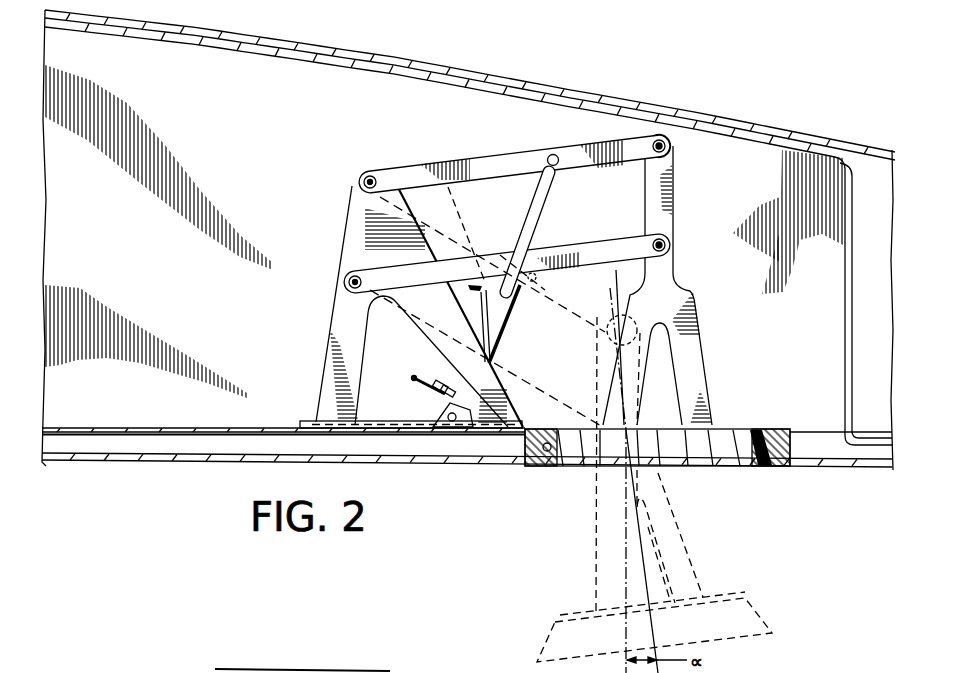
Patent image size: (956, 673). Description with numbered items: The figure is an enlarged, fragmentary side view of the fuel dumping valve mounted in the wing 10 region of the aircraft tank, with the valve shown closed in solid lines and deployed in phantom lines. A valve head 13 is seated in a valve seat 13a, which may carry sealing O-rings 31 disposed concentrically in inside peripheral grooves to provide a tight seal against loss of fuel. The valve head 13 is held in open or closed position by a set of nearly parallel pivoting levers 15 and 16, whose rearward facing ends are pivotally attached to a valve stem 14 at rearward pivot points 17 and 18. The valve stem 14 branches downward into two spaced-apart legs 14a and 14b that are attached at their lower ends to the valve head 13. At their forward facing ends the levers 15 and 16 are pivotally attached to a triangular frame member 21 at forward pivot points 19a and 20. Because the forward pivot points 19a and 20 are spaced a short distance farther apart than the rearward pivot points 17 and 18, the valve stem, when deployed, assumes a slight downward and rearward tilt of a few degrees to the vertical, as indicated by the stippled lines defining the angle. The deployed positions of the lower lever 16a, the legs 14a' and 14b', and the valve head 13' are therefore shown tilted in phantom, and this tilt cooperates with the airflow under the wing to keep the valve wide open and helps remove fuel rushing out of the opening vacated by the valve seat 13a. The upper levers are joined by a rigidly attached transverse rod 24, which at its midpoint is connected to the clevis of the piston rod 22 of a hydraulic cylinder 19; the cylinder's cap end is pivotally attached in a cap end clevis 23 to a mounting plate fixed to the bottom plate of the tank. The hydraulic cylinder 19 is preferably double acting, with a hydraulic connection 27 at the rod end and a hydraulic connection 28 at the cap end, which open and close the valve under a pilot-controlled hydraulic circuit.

The upper skin panel 10 is at (353, 54).
The valve head 13 is at (467, 468).
The valve seat 13a is at (541, 470).
The valve head in deployed position 13' is at (683, 627).
The valve stem 14 is at (675, 191).
The leg of valve stem 14a is at (721, 358).
The leg of valve stem 14b is at (642, 471).
The valve stem leg in deployed position 14a' is at (706, 538).
The valve stem leg in deployed position 14b' is at (593, 495).
The pivoting lever 15 is at (459, 165).
The pivoting lever 16 is at (612, 249).
The pivoting lever in deployed position 16a is at (547, 370).
The rearward pivot point 17 is at (672, 152).
The rearward pivot point 18 is at (676, 249).
The hydraulic cylinder 19 is at (518, 314).
The forward pivot point 19a is at (360, 177).
The forward pivot point 20 is at (344, 284).
The triangular frame member 21 is at (325, 366).
The piston rod 22 is at (527, 213).
The cap end clevis 23 is at (443, 407).
The transverse rod 24 is at (551, 154).
The hydraulic connection 27 is at (477, 287).
The hydraulic connection 28 is at (424, 383).
The sealing O-rings 31 is at (568, 468).